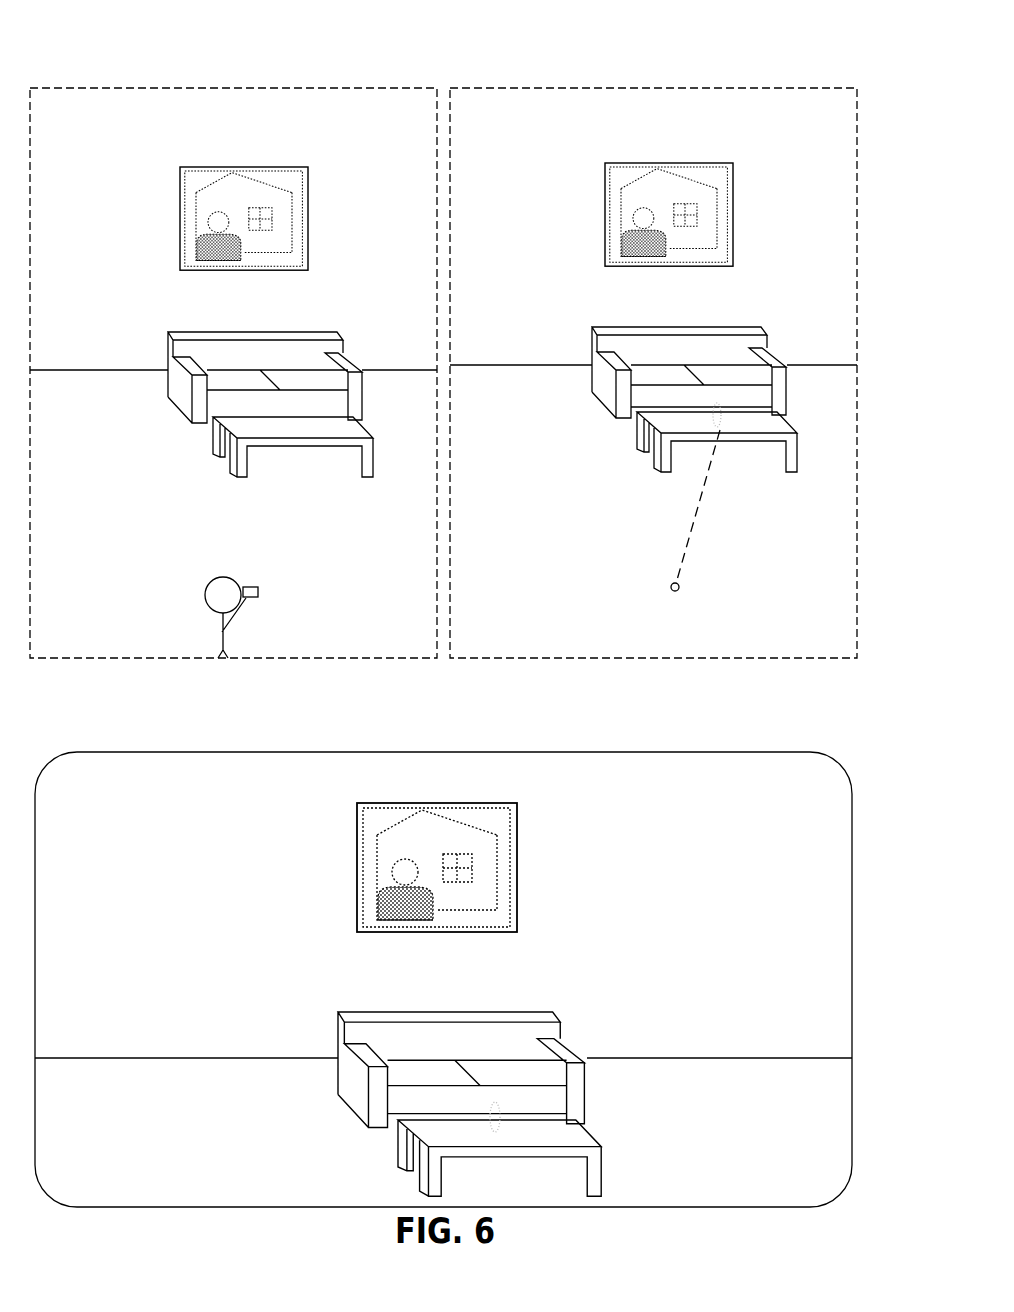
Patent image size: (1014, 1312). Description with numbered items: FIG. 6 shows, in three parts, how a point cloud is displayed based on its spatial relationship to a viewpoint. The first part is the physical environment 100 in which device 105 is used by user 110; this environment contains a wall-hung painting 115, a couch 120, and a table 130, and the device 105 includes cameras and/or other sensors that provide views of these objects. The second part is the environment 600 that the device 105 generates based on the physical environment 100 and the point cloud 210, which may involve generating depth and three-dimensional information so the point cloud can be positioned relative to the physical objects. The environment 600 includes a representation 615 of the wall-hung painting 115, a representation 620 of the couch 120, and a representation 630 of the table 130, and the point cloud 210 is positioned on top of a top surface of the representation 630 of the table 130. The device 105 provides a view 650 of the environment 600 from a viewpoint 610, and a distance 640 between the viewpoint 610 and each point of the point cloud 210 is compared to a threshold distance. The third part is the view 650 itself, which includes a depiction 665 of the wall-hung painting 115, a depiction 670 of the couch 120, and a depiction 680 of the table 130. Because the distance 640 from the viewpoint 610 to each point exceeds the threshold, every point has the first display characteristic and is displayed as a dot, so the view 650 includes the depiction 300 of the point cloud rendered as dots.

The physical environment 100 is at (53, 53).
The device 105 is at (258, 592).
The user 110 is at (222, 618).
The wall-hung painting 115 is at (188, 167).
The couch 120 is at (168, 340).
The table 130 is at (376, 441).
The environment 600 is at (478, 54).
The viewpoint 610 is at (678, 591).
The representation of the wall-hung painting 615 is at (613, 163).
The representation of the couch 620 is at (592, 335).
The representation of the table 630 is at (798, 436).
The distance 640 is at (697, 502).
The point cloud 210 is at (728, 427).
The view 650 is at (128, 790).
The depiction of the wall-hung painting 665 is at (366, 803).
The depiction of the couch 670 is at (338, 1028).
The depiction of the table 680 is at (602, 1152).
The depiction 300 is at (503, 1132).